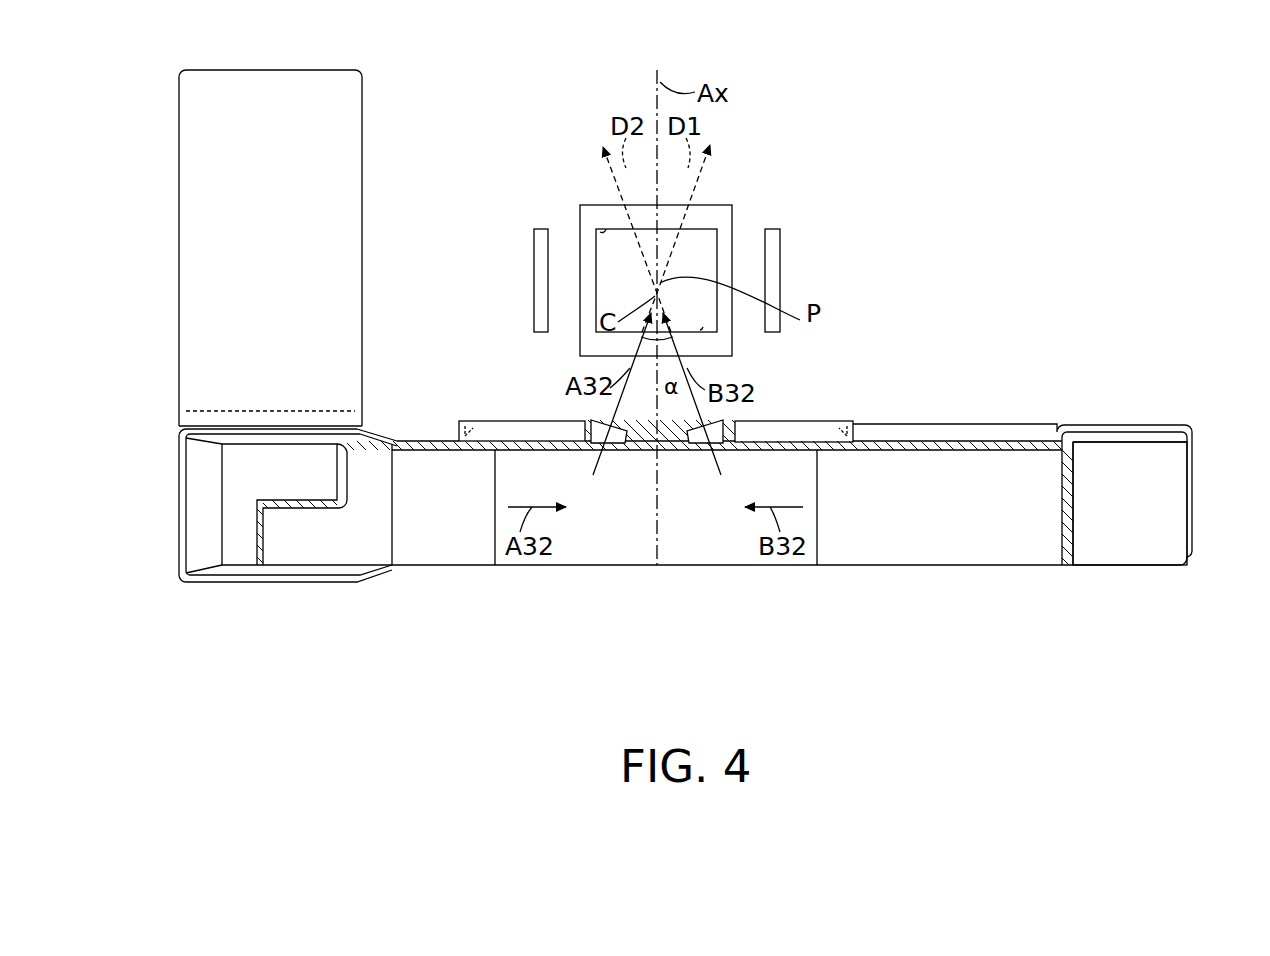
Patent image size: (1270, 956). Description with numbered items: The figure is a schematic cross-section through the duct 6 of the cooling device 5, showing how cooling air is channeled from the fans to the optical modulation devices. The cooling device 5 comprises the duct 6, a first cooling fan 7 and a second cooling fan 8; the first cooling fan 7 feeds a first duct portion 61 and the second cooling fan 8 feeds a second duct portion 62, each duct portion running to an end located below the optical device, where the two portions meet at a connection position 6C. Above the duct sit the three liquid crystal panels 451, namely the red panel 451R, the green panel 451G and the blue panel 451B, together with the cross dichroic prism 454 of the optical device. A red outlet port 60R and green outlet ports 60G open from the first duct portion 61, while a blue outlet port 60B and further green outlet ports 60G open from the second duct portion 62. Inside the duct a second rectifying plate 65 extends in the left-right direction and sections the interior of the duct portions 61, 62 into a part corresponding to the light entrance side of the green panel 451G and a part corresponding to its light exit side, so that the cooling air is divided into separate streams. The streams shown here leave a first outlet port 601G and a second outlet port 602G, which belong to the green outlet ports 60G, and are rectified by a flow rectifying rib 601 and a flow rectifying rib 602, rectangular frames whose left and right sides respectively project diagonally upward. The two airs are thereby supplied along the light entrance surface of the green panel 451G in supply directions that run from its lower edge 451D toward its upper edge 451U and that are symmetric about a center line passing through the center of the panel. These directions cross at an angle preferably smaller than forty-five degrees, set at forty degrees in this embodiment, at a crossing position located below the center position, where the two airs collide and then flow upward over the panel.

The cooling device 5 is at (1097, 258).
The duct 6 is at (683, 488).
The first cooling fan 7 is at (272, 78).
The second cooling fan 8 is at (980, 425).
The first duct portion 61 is at (381, 550).
The second duct portion 62 is at (987, 550).
The second rectifying plate 65 is at (664, 565).
The connection position 6C is at (650, 545).
The red outlet port 60R is at (477, 418).
The green outlet ports 60G is at (657, 428).
The blue outlet port 60B is at (840, 418).
The flow rectifying rib 601 is at (592, 420).
The flow rectifying rib 602 is at (723, 420).
The first outlet port 601G is at (612, 445).
The second outlet port 602G is at (702, 445).
The liquid crystal panels 451 is at (685, 241).
The red panel 451R is at (535, 250).
The green panel 451G is at (702, 232).
The blue panel 451B is at (770, 256).
The upper edge 451U is at (600, 229).
The lower edge 451D is at (703, 327).
The cross dichroic prism 454 is at (590, 206).